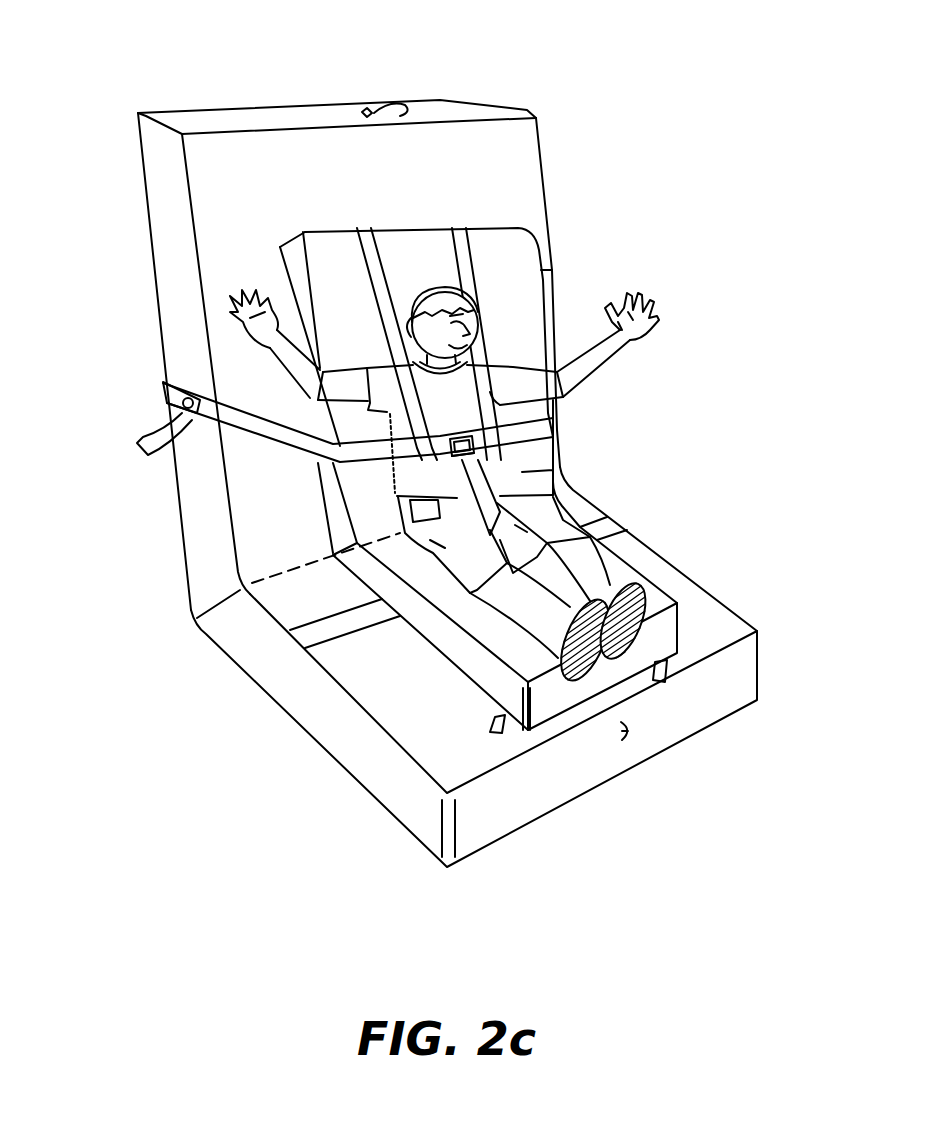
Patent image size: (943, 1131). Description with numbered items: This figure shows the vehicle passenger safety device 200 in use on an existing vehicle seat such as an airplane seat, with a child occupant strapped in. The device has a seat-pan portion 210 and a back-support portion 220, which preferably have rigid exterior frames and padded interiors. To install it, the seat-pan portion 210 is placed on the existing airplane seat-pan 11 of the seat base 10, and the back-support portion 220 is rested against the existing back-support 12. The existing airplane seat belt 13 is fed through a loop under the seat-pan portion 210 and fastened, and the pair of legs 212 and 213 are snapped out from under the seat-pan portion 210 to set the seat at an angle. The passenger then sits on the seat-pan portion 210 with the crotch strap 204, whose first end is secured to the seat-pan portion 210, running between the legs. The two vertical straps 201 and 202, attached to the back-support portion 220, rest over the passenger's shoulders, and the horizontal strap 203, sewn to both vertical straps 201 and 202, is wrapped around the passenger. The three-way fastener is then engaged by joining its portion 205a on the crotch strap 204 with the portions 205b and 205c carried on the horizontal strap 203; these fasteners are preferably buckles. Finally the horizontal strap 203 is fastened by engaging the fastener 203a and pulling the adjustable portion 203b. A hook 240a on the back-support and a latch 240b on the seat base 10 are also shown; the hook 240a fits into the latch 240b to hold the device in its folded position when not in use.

The base 10 is at (382, 788).
The existing airplane seat-pan 11 is at (733, 631).
The existing back-support 12 is at (538, 118).
The existing airplane seat belt 13 is at (302, 637).
The vehicle passenger safety device 200 is at (517, 240).
The vertical strap 201 is at (365, 230).
The vertical strap 202 is at (458, 228).
The horizontal strap 203 is at (327, 460).
The fastener 203a is at (166, 394).
The adjustable portion 203b is at (143, 453).
The crotch strap 204 is at (572, 492).
The portion of three-way fastener 205a is at (583, 414).
The portion of three-way fastener 205b is at (585, 424).
The portion of three-way fastener 205c is at (556, 466).
The seat-pan portion 210 is at (658, 602).
The leg 212 is at (497, 733).
The leg 213 is at (665, 672).
The back-support portion 220 is at (547, 270).
The hook 240a is at (367, 110).
The latch 240b is at (630, 730).